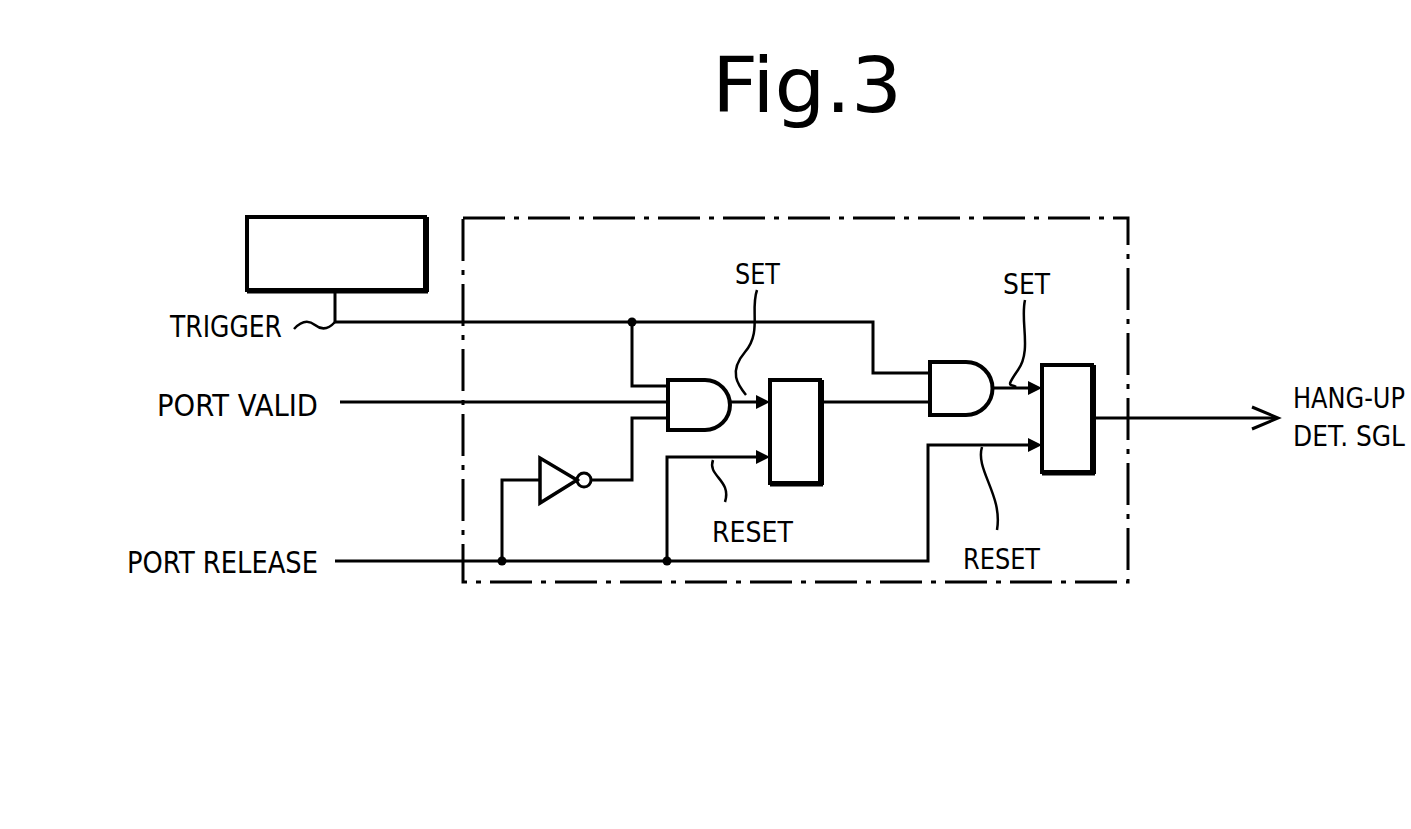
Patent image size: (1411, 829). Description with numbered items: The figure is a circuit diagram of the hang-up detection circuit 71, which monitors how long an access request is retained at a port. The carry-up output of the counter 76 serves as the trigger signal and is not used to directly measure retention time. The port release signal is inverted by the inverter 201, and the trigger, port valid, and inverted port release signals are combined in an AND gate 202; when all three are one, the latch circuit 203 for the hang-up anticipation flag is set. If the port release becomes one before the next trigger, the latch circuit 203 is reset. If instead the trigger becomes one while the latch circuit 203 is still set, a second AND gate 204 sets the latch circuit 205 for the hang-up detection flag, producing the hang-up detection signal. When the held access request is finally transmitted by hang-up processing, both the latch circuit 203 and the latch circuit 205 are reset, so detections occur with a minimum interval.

The hang-up detection circuit 71 is at (835, 218).
The counter 76 is at (392, 217).
The inverter 201 is at (568, 490).
The AND gate 202 is at (705, 378).
The latch circuit for hang-up anticipation flag 203 is at (850, 432).
The AND gate 204 is at (930, 362).
The latch circuit for hang-up detection flag 205 is at (1040, 455).